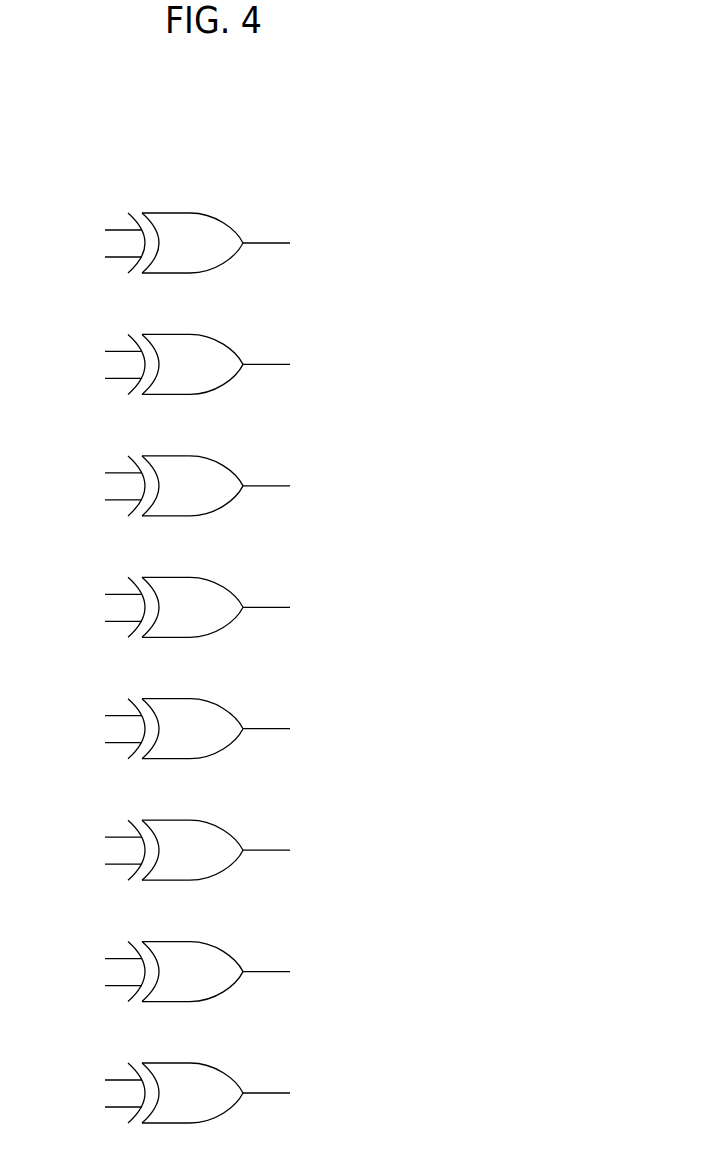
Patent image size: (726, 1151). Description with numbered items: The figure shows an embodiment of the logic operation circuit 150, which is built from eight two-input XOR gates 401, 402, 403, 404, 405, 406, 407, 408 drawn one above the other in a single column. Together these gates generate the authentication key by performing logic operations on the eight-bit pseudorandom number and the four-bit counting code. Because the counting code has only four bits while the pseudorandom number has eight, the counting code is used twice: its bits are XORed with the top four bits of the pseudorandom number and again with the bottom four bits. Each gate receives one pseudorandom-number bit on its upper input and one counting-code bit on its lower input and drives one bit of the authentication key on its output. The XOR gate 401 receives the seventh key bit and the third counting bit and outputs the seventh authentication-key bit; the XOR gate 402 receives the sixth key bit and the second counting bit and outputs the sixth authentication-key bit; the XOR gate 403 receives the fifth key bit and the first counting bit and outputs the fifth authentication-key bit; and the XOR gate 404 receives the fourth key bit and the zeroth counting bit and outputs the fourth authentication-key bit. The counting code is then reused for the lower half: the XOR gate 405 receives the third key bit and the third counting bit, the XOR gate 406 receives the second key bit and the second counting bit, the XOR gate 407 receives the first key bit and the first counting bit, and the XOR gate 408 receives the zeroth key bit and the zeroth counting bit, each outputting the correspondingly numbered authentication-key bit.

The logic operation circuit 150 is at (368, 148).
The XOR gate 401 is at (172, 213).
The XOR gate 402 is at (172, 334).
The XOR gate 403 is at (172, 456).
The XOR gate 404 is at (172, 577).
The XOR gate 405 is at (172, 699).
The XOR gate 406 is at (172, 820).
The XOR gate 407 is at (172, 942).
The XOR gate 408 is at (172, 1063).